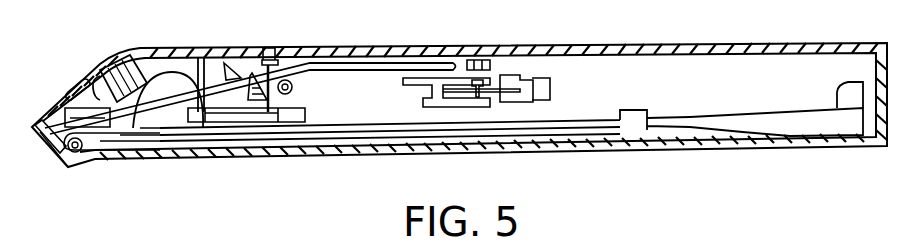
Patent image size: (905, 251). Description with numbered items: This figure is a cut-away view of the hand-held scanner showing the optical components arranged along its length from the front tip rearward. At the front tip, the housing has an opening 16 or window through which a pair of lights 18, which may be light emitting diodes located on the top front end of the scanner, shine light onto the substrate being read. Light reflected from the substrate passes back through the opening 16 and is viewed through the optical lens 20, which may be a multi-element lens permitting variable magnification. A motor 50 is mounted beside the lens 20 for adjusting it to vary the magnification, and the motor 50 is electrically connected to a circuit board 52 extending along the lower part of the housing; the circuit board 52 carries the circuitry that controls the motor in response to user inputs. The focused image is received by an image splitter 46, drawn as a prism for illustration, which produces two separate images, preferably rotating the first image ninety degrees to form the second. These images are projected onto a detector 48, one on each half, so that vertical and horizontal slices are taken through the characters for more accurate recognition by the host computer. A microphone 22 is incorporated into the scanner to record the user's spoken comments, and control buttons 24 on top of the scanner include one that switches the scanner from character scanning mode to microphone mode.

The opening 16 is at (45, 100).
The lights 18 is at (68, 77).
The lens 20 is at (97, 73).
The microphone 22 is at (217, 53).
The control buttons 24 is at (277, 45).
The image splitter 46 is at (235, 58).
The detector 48 is at (293, 90).
The motor 50 is at (125, 60).
The circuit board 52 is at (555, 120).